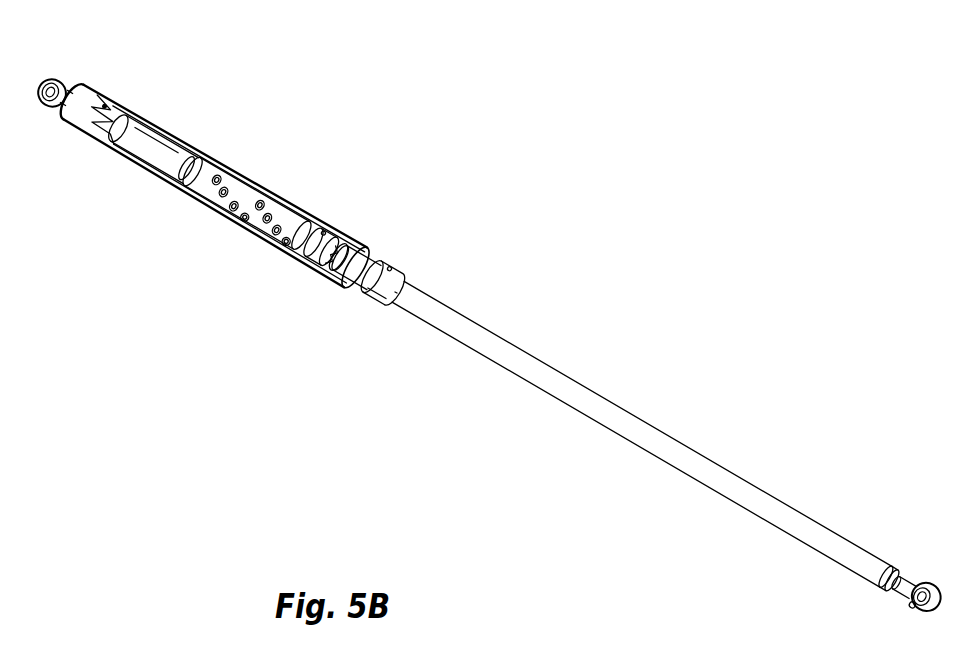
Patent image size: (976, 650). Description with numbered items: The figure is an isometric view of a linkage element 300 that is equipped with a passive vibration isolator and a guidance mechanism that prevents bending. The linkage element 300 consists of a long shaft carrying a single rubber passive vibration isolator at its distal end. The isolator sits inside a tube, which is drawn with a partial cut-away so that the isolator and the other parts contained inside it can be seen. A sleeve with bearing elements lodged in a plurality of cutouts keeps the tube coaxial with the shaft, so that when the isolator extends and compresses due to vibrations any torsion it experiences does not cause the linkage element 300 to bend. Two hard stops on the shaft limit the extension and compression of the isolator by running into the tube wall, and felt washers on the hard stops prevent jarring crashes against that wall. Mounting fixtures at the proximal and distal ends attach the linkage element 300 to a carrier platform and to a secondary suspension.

The linkage element 300 is at (737, 231).